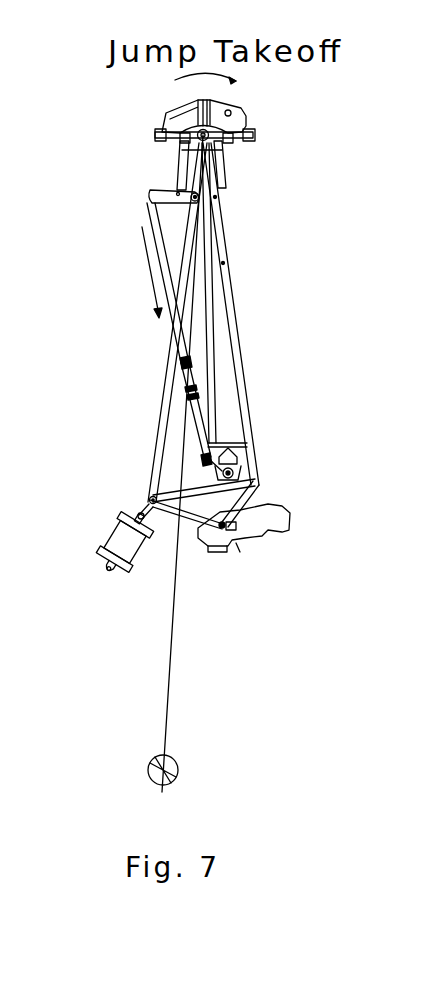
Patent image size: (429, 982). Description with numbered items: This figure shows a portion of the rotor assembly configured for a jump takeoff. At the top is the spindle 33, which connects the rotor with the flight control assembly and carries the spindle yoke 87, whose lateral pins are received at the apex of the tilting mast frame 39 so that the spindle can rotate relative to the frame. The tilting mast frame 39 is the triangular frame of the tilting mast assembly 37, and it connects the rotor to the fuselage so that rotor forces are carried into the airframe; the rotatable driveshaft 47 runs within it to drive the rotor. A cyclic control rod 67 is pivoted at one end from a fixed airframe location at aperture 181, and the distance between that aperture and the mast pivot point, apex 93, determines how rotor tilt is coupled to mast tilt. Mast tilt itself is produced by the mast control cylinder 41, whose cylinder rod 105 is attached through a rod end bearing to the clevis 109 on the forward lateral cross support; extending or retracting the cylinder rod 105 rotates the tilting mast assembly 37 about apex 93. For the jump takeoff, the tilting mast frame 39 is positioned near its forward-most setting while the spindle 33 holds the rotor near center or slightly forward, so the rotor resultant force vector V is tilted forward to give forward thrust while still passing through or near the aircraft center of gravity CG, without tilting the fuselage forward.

The spindle 33 is at (243, 118).
The spindle yoke 87 is at (225, 145).
The tilting mast assembly 37 is at (241, 336).
The rotatable driveshaft 47 is at (248, 418).
The tilting mast frame 39 is at (170, 334).
The cyclic control rod 67 is at (160, 262).
The aperture 181 is at (203, 458).
The clevis 109 is at (152, 500).
The apex 93 is at (225, 538).
The cylinder rod 105 is at (139, 512).
The mast control cylinder 41 is at (120, 515).
The resultant force vector V is at (170, 680).
The center of gravity CG is at (178, 772).